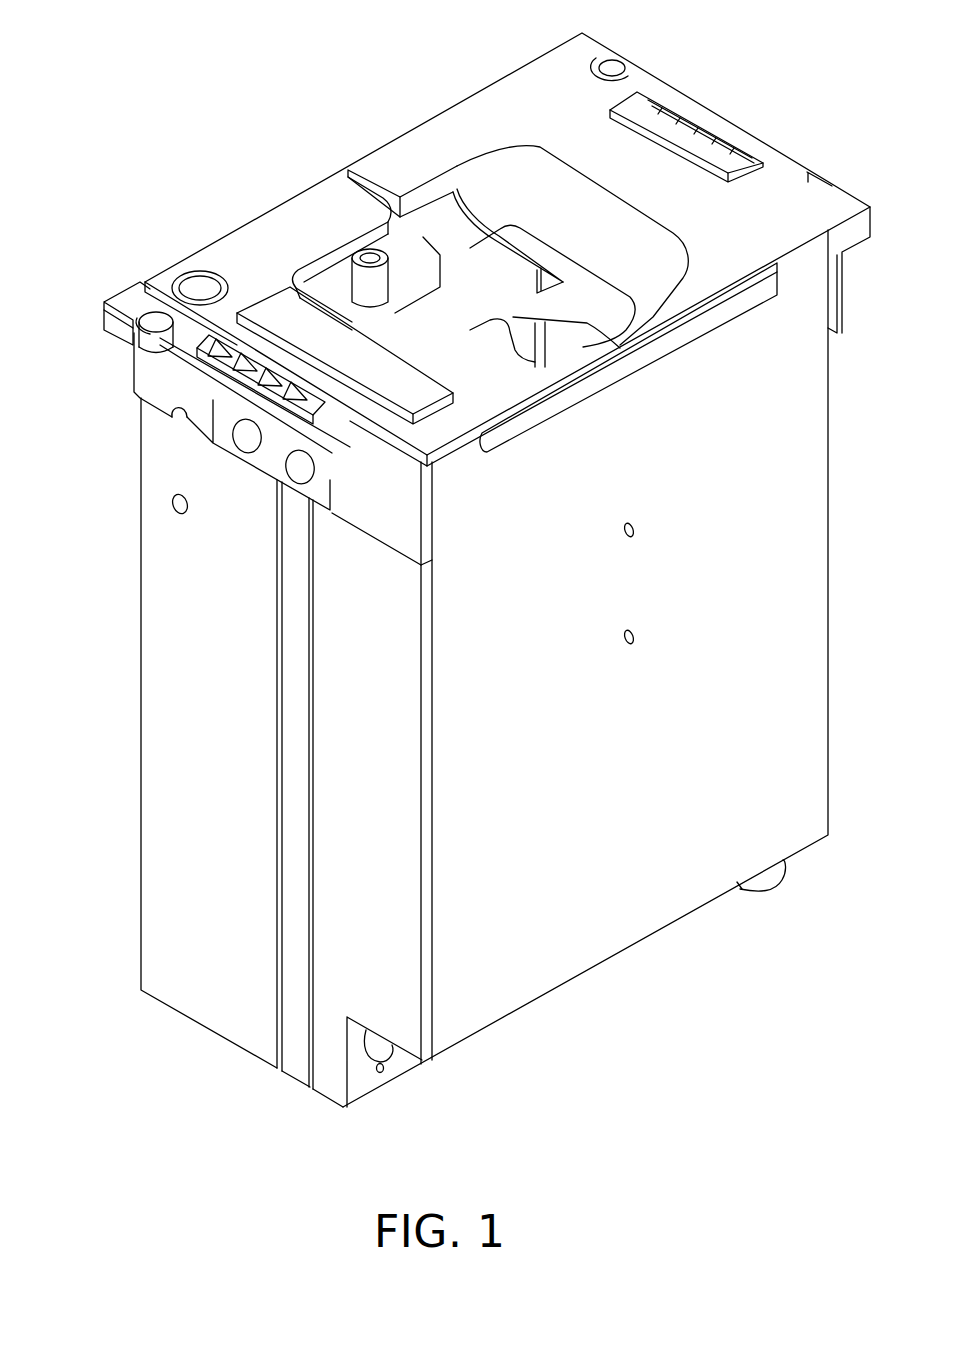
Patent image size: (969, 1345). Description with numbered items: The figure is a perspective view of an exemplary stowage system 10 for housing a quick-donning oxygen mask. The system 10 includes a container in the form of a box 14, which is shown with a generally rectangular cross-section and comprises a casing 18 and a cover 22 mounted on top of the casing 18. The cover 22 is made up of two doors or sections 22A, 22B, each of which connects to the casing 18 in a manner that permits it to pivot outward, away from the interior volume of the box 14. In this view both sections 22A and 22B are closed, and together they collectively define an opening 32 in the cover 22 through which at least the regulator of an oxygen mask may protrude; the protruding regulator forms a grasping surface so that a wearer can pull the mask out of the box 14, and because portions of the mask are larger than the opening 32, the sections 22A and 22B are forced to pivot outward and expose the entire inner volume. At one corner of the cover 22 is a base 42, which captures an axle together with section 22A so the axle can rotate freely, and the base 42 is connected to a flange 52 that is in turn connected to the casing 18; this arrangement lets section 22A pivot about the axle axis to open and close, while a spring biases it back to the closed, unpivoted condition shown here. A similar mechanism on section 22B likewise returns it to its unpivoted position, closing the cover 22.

The stowage system 10 is at (143, 1137).
The box 14 is at (138, 784).
The casing 18 is at (495, 1000).
The cover 22 is at (383, 126).
The section 22A is at (263, 242).
The section 22B is at (492, 106).
The opening 32 is at (494, 297).
The base 42 is at (128, 292).
The flange 52 is at (140, 385).